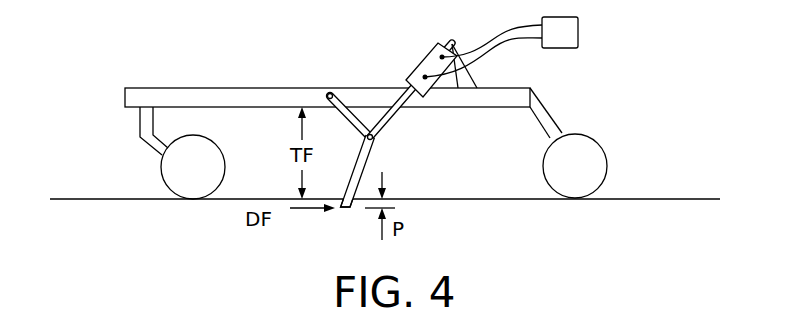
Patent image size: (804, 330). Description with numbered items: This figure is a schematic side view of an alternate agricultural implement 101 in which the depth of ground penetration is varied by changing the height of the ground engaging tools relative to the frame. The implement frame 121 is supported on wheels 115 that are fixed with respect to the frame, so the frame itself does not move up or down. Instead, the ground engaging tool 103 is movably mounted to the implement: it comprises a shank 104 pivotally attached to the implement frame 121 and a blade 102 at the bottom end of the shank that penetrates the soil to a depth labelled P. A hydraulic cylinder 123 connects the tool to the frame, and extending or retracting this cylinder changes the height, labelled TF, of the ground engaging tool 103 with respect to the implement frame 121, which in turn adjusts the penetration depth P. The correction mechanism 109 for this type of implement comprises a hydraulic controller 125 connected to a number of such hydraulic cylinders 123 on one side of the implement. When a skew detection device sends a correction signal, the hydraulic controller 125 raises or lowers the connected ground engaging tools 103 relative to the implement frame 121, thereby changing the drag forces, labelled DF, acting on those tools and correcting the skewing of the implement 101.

The alternate agricultural implement 101 is at (570, 85).
The blade 102 is at (345, 208).
The ground engaging tool 103 is at (392, 155).
The shank 104 is at (365, 165).
The correction mechanism 109 is at (578, 32).
The wheels 115 is at (163, 174).
The implement frame 121 is at (205, 88).
The hydraulic cylinder 123 is at (422, 61).
The hydraulic controller 125 is at (617, 30).